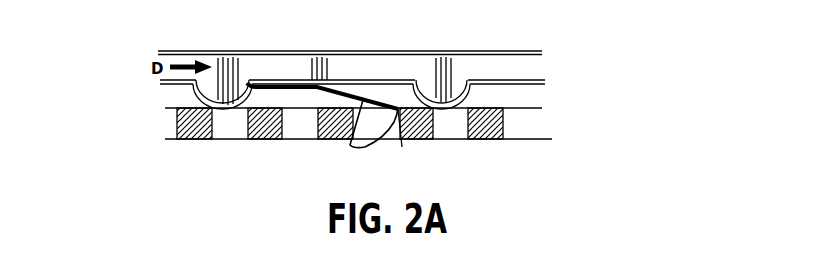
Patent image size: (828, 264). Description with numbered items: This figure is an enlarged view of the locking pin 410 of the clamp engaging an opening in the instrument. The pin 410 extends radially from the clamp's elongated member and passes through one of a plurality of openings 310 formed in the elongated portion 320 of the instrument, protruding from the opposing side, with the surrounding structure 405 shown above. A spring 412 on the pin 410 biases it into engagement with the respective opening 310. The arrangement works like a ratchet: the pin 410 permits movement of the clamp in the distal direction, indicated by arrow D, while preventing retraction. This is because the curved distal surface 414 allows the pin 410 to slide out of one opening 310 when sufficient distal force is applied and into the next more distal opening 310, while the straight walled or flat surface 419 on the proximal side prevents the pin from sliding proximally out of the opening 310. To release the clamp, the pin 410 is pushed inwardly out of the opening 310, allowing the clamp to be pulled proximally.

The microfluidic channel 405 is at (534, 66).
The elongated portion 320 is at (530, 124).
The spring 412 is at (291, 78).
The locking pin 410 is at (375, 144).
The curved distal surface 414 is at (393, 141).
The flat surface 419 is at (312, 136).
The opening 310 is at (453, 146).